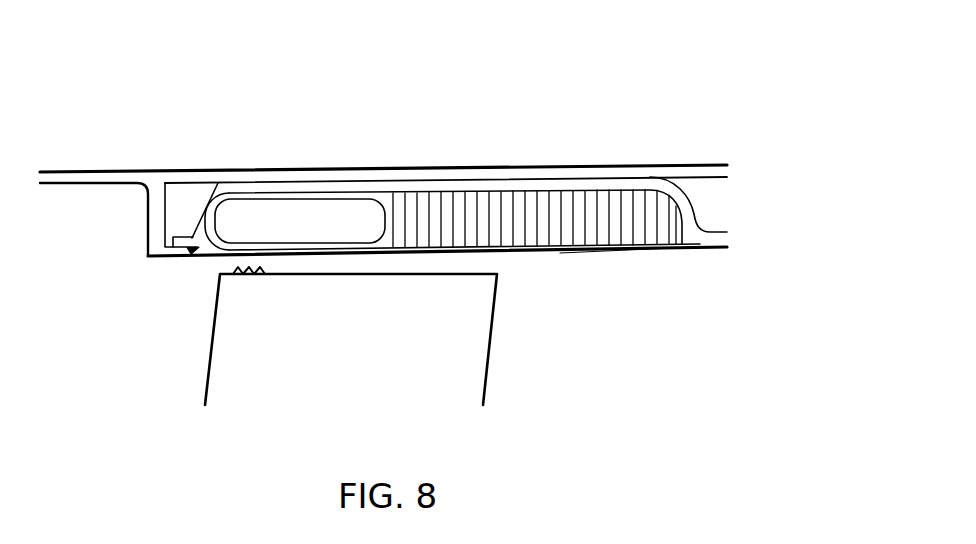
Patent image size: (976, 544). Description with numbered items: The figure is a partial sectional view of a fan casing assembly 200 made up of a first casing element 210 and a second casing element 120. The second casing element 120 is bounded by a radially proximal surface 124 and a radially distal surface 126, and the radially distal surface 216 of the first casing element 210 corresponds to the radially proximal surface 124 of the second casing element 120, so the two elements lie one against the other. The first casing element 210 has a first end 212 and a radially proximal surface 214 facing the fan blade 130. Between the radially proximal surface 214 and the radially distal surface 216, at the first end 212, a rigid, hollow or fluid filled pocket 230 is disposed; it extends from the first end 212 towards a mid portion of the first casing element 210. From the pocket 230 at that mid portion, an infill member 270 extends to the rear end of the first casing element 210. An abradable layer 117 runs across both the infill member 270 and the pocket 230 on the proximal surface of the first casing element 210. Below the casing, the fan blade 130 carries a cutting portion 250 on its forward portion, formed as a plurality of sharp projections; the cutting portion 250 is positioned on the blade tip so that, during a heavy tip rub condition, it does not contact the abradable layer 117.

The fan casing assembly 200 is at (553, 101).
The second casing element 120 is at (652, 166).
The radially distal surface 126 is at (581, 166).
The radially proximal surface 124 is at (702, 179).
The first end 212 is at (201, 252).
The radially distal surface 216 is at (437, 190).
The infill member 270 is at (537, 233).
The pocket 230 is at (329, 207).
The radially proximal surface 214 is at (512, 253).
The abradable layer 117 is at (605, 254).
The first casing element 210 is at (662, 251).
The fan blade 130 is at (425, 346).
The cutting portion 250 is at (241, 276).